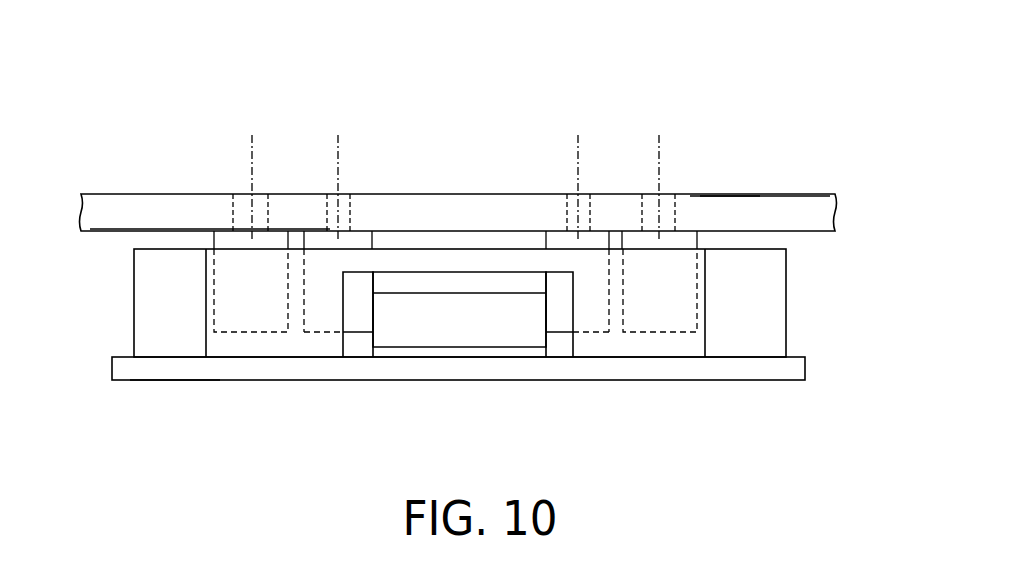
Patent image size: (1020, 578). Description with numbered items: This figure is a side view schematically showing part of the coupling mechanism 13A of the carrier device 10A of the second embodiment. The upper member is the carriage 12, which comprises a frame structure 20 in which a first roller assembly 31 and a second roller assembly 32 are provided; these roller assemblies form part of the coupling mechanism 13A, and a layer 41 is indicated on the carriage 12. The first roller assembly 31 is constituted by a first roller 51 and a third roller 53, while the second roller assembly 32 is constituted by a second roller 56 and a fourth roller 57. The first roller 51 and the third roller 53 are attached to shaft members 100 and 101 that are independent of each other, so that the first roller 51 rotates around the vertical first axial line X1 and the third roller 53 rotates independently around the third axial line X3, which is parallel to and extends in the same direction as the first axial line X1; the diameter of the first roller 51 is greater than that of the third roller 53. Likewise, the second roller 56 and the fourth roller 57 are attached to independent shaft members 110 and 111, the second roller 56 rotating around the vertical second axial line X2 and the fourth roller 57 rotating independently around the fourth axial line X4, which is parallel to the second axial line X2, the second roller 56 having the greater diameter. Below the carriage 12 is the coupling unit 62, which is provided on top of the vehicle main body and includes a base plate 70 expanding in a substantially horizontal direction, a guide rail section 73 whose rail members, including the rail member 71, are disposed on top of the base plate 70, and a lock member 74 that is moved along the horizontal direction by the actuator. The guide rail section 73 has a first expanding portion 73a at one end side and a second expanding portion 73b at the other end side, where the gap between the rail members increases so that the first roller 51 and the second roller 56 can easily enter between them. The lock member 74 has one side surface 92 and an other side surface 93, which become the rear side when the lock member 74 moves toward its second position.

The carrier device 10A is at (712, 84).
The carriage 12 is at (848, 206).
The frame structure 20 is at (130, 180).
The insulating layer 41 is at (763, 207).
The first roller assembly 31 is at (620, 172).
The second roller assembly 32 is at (283, 172).
The shaft member 100 is at (672, 217).
The shaft member 101 is at (563, 220).
The shaft member 110 is at (242, 217).
The shaft member 111 is at (352, 217).
The first axial line X1 is at (659, 155).
The second axial line X2 is at (252, 152).
The third axial line X3 is at (578, 152).
The fourth axial line X4 is at (338, 152).
The guide rail section 73 is at (803, 325).
The first expanding portion 73a is at (787, 272).
The second expanding portion 73b is at (153, 280).
The coupling mechanism 13A is at (107, 317).
The second roller 56 is at (255, 317).
The first roller 51 is at (657, 317).
The fourth roller 57 is at (355, 322).
The third roller 53 is at (558, 322).
The lock member 74 is at (458, 332).
The rail member 71 is at (452, 258).
The other side surface 93 is at (373, 313).
The one side surface 92 is at (546, 313).
The base plate 70 is at (742, 368).
The coupling unit 62 is at (172, 392).